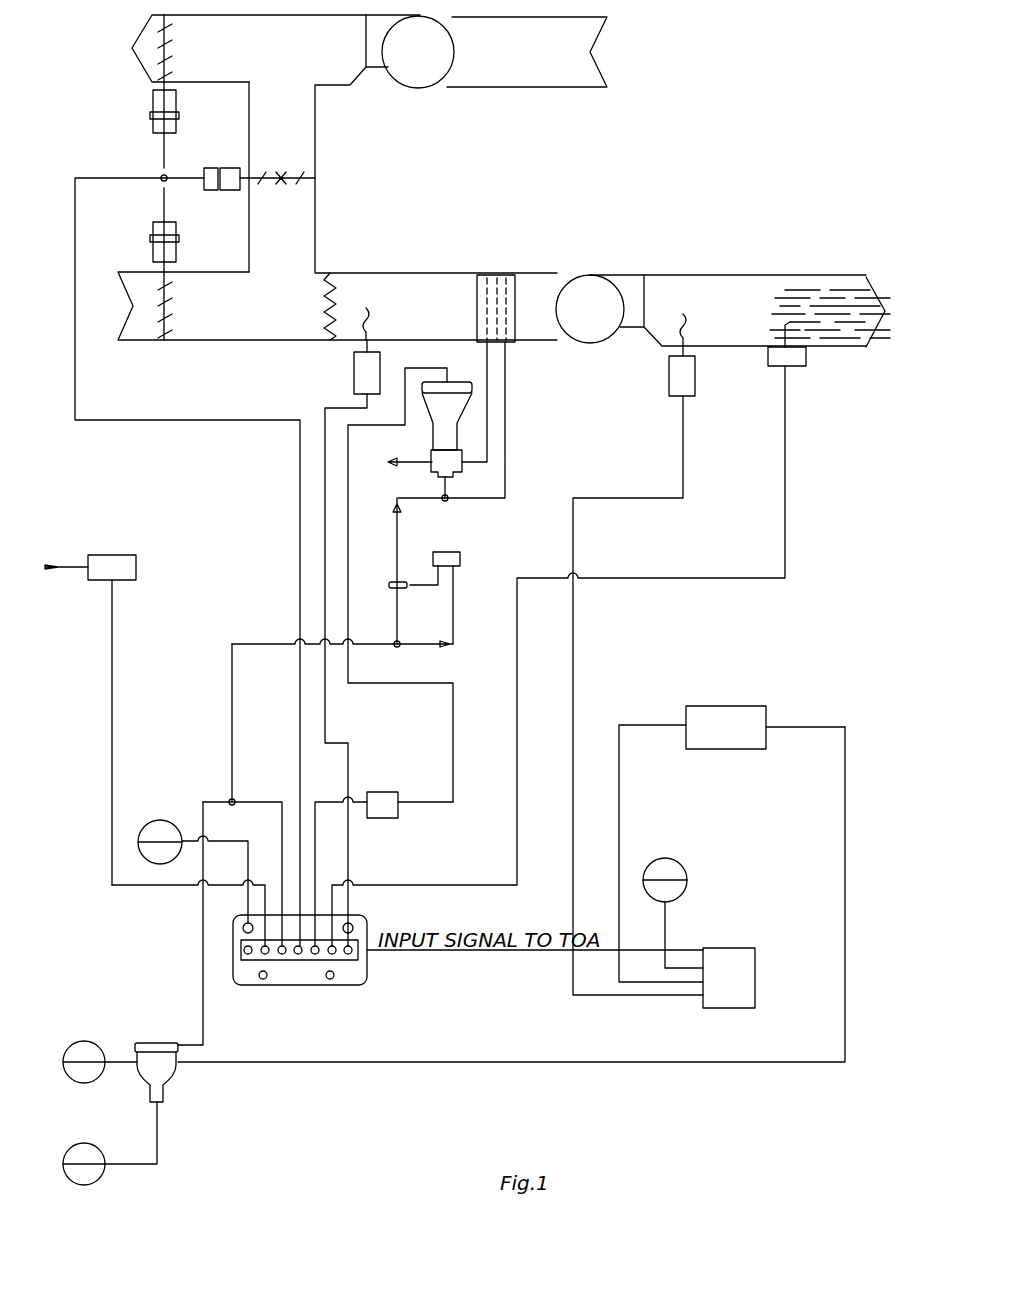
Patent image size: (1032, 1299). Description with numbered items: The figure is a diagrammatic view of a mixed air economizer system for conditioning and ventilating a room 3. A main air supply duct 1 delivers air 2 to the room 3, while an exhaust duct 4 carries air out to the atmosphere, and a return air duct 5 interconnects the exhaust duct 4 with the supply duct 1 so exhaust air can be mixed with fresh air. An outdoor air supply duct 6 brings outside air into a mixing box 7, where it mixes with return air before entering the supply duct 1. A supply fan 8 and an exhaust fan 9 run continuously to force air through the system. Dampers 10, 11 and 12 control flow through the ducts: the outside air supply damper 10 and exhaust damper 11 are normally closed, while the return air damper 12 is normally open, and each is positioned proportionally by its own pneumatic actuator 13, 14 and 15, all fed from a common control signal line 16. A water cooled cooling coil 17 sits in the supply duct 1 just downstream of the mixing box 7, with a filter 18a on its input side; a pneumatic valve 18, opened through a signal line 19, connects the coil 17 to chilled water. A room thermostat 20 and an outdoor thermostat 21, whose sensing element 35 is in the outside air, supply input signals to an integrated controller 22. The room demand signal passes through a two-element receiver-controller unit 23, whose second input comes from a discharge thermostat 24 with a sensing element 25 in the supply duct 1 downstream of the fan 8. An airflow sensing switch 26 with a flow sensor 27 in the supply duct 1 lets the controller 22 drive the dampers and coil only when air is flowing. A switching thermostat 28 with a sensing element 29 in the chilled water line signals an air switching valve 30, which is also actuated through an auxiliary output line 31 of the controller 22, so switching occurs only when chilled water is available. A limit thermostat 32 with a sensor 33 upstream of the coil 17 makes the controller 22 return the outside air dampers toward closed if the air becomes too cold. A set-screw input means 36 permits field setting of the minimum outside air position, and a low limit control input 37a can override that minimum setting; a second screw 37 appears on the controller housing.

The main air supply duct 1 is at (764, 312).
The air 2 is at (835, 292).
The room 3 is at (816, 226).
The exhaust duct 4 is at (530, 66).
The return air duct 5 is at (290, 224).
The outdoor air supply duct 6 is at (216, 322).
The mixing box 7 is at (300, 317).
The supply fan 8 is at (600, 322).
The exhaust fan 9 is at (418, 64).
The outside air supply damper 10 is at (152, 332).
The exhaust damper 11 is at (180, 50).
The return air damper 12 is at (288, 175).
The pneumatic actuator 13 is at (178, 245).
The pneumatic actuator 14 is at (178, 128).
The pneumatic actuator 15 is at (232, 168).
The common control signal line 16 is at (88, 240).
The cooling coil 17 is at (508, 250).
The valve 18 is at (433, 436).
The filter 18a is at (338, 300).
The signal line 19 is at (350, 487).
The room thermostat 20 is at (740, 706).
The outdoor thermostat 21 is at (136, 565).
The controller 22 is at (290, 990).
The receiver-controller unit 23 is at (755, 925).
The discharge thermostat 24 is at (695, 376).
The sensing element 25 is at (686, 316).
The airflow sensing switch 26 is at (806, 364).
The flow sensor 27 is at (790, 322).
The switching thermostat 28 is at (480, 538).
The sensing element 29 is at (388, 584).
The air switching valve 30 is at (170, 1040).
The auxiliary output line 31 is at (270, 772).
The limit thermostat 32 is at (354, 373).
The sensor 33 is at (370, 310).
The sensing element 35 is at (50, 570).
The set-screw input means 36 is at (333, 979).
The mounting screw 37 is at (260, 979).
The low limit control input 37a is at (353, 922).